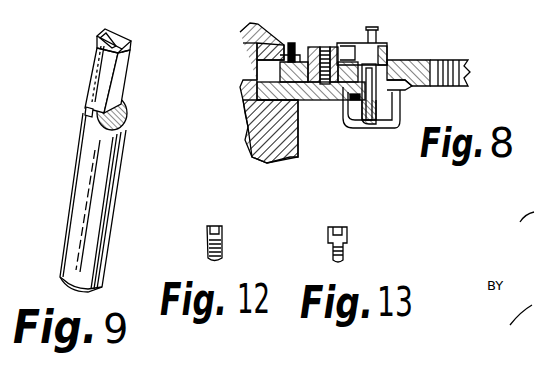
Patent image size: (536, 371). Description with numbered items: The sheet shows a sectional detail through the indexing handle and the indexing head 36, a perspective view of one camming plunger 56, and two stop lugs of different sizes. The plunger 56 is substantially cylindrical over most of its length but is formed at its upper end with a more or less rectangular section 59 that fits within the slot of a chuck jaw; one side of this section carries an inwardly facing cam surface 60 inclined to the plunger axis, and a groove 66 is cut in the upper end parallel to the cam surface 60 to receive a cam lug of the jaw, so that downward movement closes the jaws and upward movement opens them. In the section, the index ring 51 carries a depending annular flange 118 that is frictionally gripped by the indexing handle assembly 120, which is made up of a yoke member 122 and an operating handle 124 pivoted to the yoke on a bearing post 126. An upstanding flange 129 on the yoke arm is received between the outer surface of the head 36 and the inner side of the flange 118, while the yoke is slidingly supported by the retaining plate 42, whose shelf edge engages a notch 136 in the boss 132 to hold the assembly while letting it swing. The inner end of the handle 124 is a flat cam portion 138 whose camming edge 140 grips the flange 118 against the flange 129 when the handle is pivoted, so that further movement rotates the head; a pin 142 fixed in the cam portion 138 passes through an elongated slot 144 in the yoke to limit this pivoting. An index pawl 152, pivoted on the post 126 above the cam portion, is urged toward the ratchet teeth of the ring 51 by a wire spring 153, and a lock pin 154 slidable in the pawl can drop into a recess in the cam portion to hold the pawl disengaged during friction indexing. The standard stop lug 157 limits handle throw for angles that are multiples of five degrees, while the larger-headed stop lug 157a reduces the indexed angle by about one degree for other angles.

In FIG. 8, the indexing head 36 is at (255, 89).
In FIG. 8, the retaining plate 42 is at (265, 97).
In FIG. 8, the index ring 51 is at (252, 28).
In FIG. 9, the camming plunger 56 is at (108, 181).
In FIG. 9, the rectangular section 59 is at (130, 42).
In FIG. 9, the cam surface 60 is at (119, 81).
In FIG. 9, the groove 66 is at (96, 80).
In FIG. 8, the annular flange 118 is at (285, 55).
In FIG. 8, the indexing handle assembly 120 is at (402, 60).
In FIG. 8, the yoke member 122 is at (338, 100).
In FIG. 8, the operating handle 124 is at (470, 51).
In FIG. 8, the bearing post 126 is at (318, 100).
In FIG. 8, the upstanding flange 129 is at (245, 62).
In FIG. 8, the boss 132 is at (370, 124).
In FIG. 8, the notch 136 is at (352, 120).
In FIG. 8, the flat cam portion 138 is at (356, 44).
In FIG. 8, the camming edge 140 is at (320, 48).
In FIG. 8, the pin 142 is at (398, 90).
In FIG. 8, the elongated slot 144 is at (375, 124).
In FIG. 8, the index pawl 152 is at (372, 27).
In FIG. 8, the wire spring 153 is at (340, 62).
In FIG. 8, the lock pin 154 is at (384, 45).
In FIG. 12, the stop lug 157 is at (223, 232).
In FIG. 13, the stop lug 157a is at (348, 232).